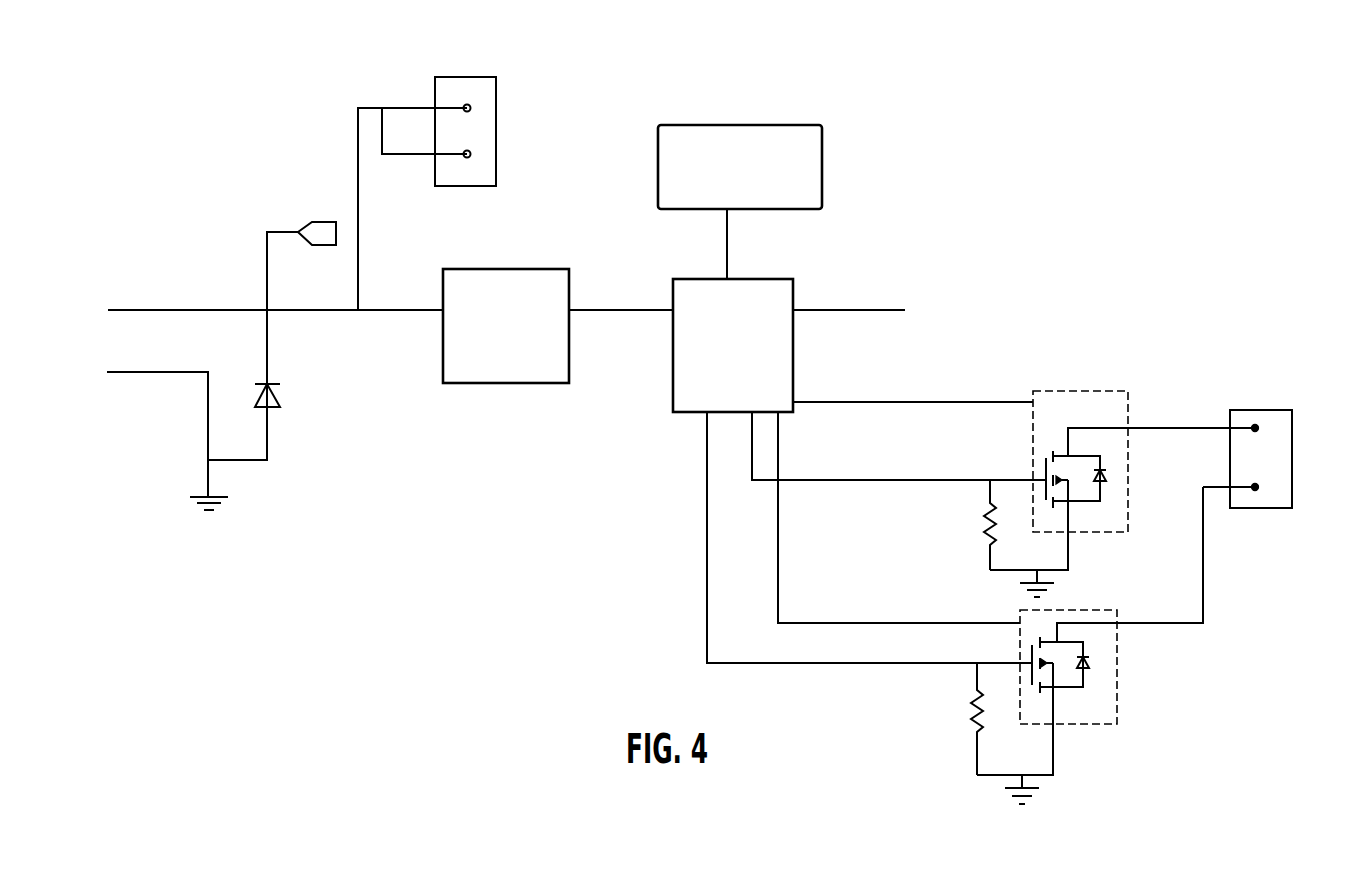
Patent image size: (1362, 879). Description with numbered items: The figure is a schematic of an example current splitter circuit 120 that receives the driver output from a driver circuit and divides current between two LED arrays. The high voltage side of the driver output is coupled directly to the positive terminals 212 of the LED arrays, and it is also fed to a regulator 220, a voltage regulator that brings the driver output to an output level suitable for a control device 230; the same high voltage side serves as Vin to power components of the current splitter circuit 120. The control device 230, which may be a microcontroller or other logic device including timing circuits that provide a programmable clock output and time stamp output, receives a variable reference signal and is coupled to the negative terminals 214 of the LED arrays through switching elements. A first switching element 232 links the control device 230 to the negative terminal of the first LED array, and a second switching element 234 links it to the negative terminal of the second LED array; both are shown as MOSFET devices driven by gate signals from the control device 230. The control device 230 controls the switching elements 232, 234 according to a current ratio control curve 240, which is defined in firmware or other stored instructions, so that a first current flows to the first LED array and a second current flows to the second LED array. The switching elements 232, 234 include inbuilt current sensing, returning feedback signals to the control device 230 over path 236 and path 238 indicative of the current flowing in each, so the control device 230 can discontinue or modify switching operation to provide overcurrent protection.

The current splitter circuit 120 is at (1143, 176).
The positive terminals 212 is at (496, 108).
The negative terminals 214 is at (1278, 452).
The regulator 220 is at (511, 383).
The control device 230 is at (793, 368).
The first switching element 232 is at (1097, 391).
The second switching element 234 is at (1108, 724).
The path 236 is at (948, 402).
The path 238 is at (868, 623).
The current ratio control curve 240 is at (822, 150).